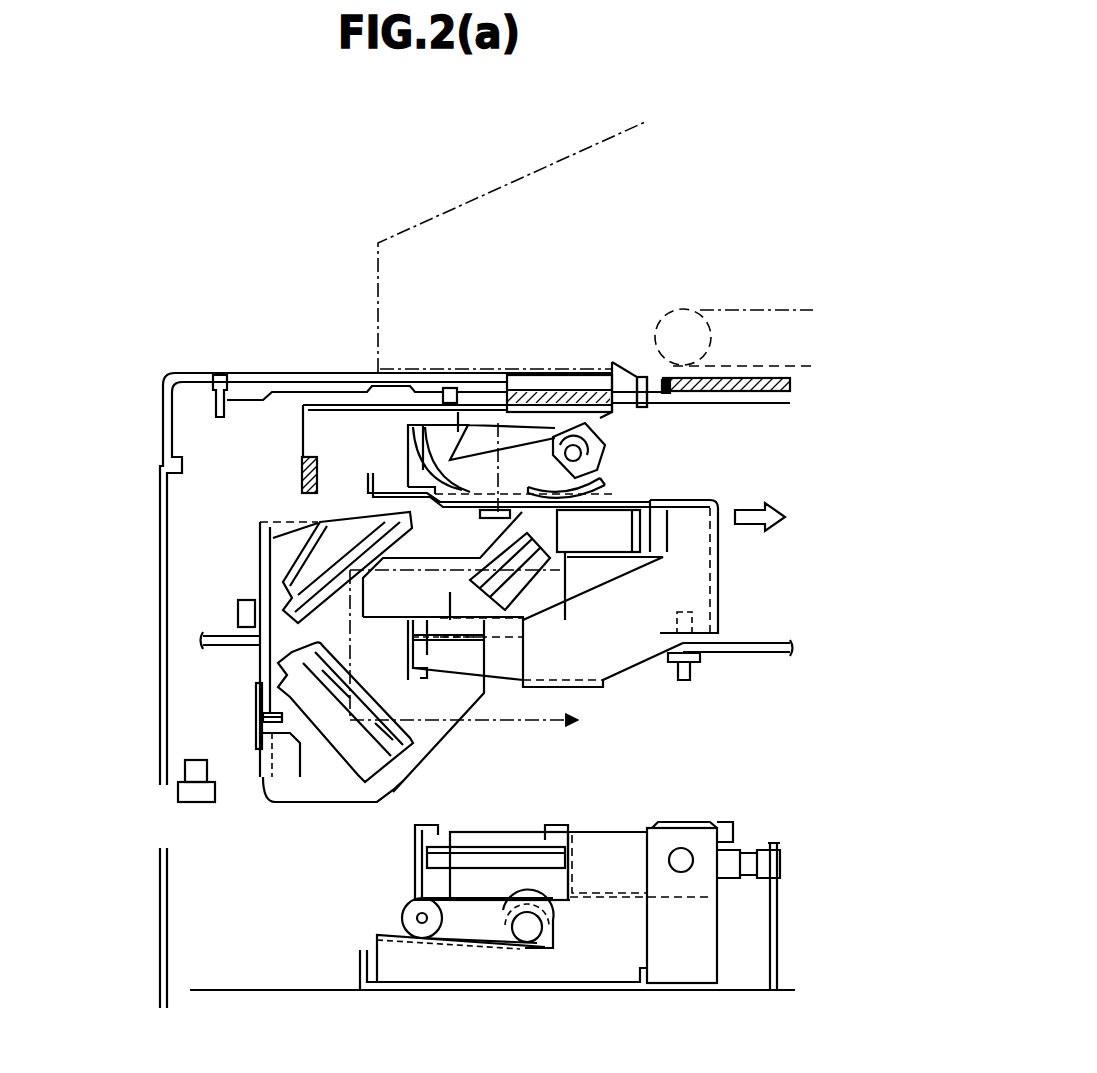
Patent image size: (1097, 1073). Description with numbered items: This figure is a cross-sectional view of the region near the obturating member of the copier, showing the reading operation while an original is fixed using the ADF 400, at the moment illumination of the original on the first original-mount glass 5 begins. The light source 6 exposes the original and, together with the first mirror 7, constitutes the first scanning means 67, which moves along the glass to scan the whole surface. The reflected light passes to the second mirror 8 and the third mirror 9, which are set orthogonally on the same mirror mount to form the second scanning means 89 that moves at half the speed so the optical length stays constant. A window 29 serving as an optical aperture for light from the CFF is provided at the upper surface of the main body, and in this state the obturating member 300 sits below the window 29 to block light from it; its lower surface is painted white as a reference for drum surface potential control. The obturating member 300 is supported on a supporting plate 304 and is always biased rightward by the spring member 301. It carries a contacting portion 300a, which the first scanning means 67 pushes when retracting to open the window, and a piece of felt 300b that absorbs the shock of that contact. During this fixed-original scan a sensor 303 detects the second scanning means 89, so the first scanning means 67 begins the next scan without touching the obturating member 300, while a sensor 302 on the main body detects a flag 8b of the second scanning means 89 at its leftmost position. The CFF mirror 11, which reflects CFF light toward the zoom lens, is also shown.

The ADF 400 is at (485, 188).
The spring member 301 is at (438, 390).
The obturating member 300 is at (545, 403).
The window 29 is at (620, 403).
The first original-mount glass 5 is at (750, 393).
The light source 6 is at (568, 455).
The supporting plate 304 is at (273, 400).
The contacting portion 300a is at (302, 470).
The piece of felt 300b is at (300, 457).
The sensor 303 is at (248, 598).
The second mirror 8 is at (368, 533).
The first mirror 7 is at (532, 572).
The first scanning means 67 is at (735, 588).
The sensor 302 is at (178, 792).
The flag 8b is at (278, 760).
The third mirror 9 is at (393, 795).
The second scanning means 89 is at (448, 752).
The CFF mirror 11 is at (517, 848).